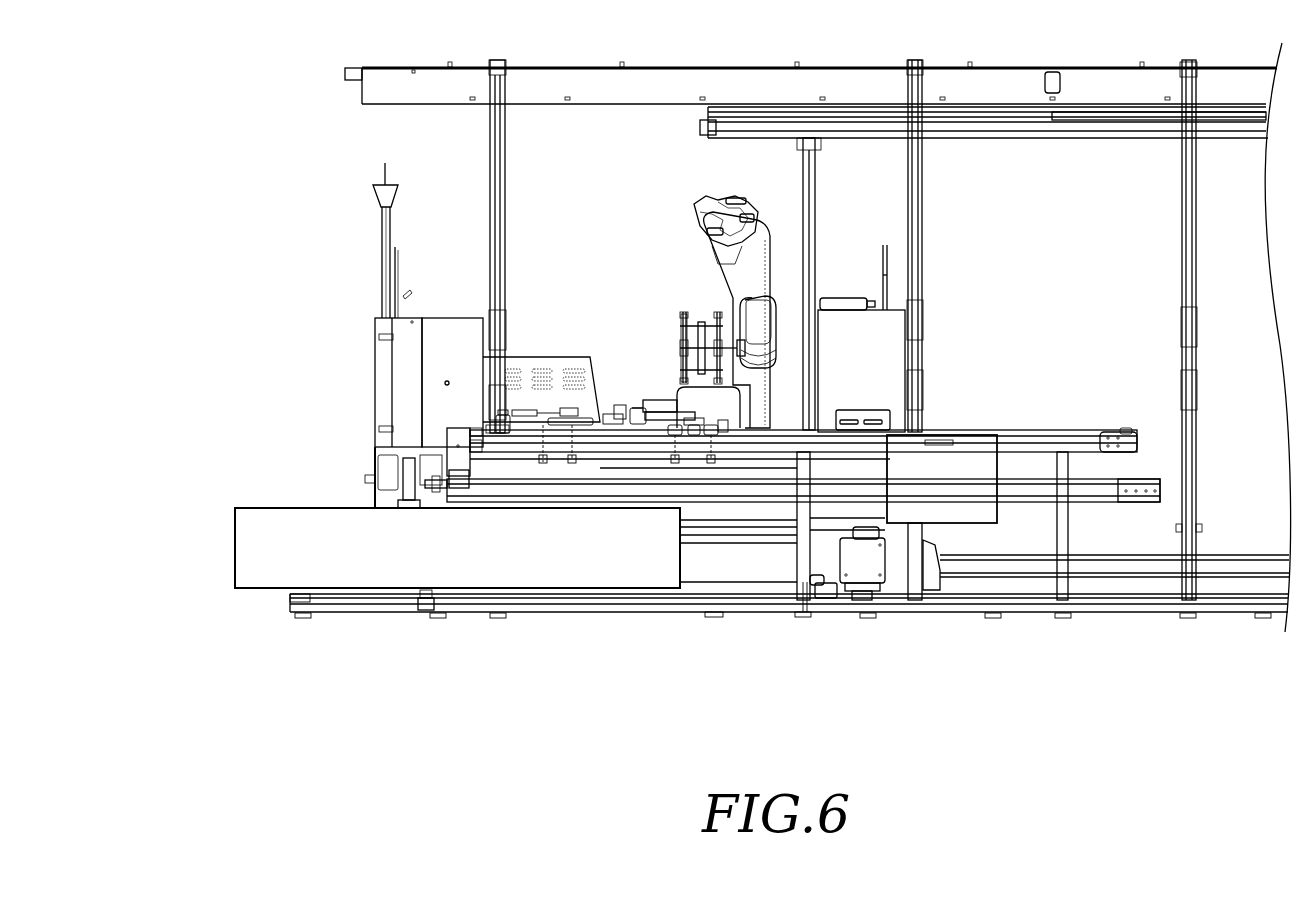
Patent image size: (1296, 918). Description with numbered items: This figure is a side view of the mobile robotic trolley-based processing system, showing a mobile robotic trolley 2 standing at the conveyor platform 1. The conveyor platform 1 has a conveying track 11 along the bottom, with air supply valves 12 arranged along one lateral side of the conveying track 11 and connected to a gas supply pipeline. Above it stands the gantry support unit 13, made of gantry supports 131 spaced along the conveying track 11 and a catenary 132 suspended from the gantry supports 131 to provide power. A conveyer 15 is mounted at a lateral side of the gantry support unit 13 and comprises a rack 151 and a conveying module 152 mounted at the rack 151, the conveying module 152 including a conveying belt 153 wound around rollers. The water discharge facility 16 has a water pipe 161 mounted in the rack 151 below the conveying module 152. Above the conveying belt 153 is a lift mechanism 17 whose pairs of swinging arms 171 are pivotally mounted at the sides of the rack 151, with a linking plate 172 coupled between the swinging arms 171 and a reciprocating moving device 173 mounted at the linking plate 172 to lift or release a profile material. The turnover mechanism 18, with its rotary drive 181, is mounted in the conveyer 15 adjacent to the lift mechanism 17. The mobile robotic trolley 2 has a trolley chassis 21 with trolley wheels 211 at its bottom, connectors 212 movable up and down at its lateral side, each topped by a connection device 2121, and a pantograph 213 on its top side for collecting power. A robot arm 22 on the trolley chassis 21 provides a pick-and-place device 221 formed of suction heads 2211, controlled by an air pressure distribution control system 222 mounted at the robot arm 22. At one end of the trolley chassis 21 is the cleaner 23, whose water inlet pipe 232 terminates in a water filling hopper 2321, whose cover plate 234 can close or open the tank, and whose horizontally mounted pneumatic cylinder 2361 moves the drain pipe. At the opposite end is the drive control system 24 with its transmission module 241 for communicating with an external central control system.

The conveyor platform 1 is at (322, 620).
The conveying track 11 is at (357, 603).
The air supply valve 12 is at (421, 616).
The gantry support unit 13 is at (516, 178).
The gantry support 131 is at (500, 133).
The catenary 132 is at (353, 74).
The conveyer 15 is at (300, 385).
The rack 151 is at (503, 444).
The conveying module 152 is at (455, 467).
The conveying belt 153 is at (468, 432).
The water discharge facility 16 is at (237, 541).
The water pipe 161 is at (404, 496).
The lift mechanism 17 is at (795, 668).
The swinging arm 171 is at (680, 452).
The linking plate 172 is at (708, 440).
The reciprocating moving device 173 is at (695, 440).
The turnover mechanism 18 is at (634, 339).
The rotary drive 181 is at (653, 399).
The mobile robotic trolley 2 is at (309, 327).
The trolley chassis 21 is at (932, 562).
The trolley wheel 211 is at (823, 590).
The connector 212 is at (868, 600).
The connection device 2121 is at (867, 533).
The pantograph 213 is at (810, 188).
The robot arm 22 is at (689, 191).
The pick-and-place device 221 is at (710, 302).
The suction head 2211 is at (682, 312).
The air pressure distribution control system 222 is at (712, 208).
The cleaner 23 is at (381, 349).
The water inlet pipe 232 is at (383, 231).
The water filling hopper 2321 is at (382, 199).
The cover plate 234 is at (396, 262).
The pneumatic cylinder 2361 is at (440, 483).
The drive control system 24 is at (900, 355).
The transmission module 241 is at (846, 297).